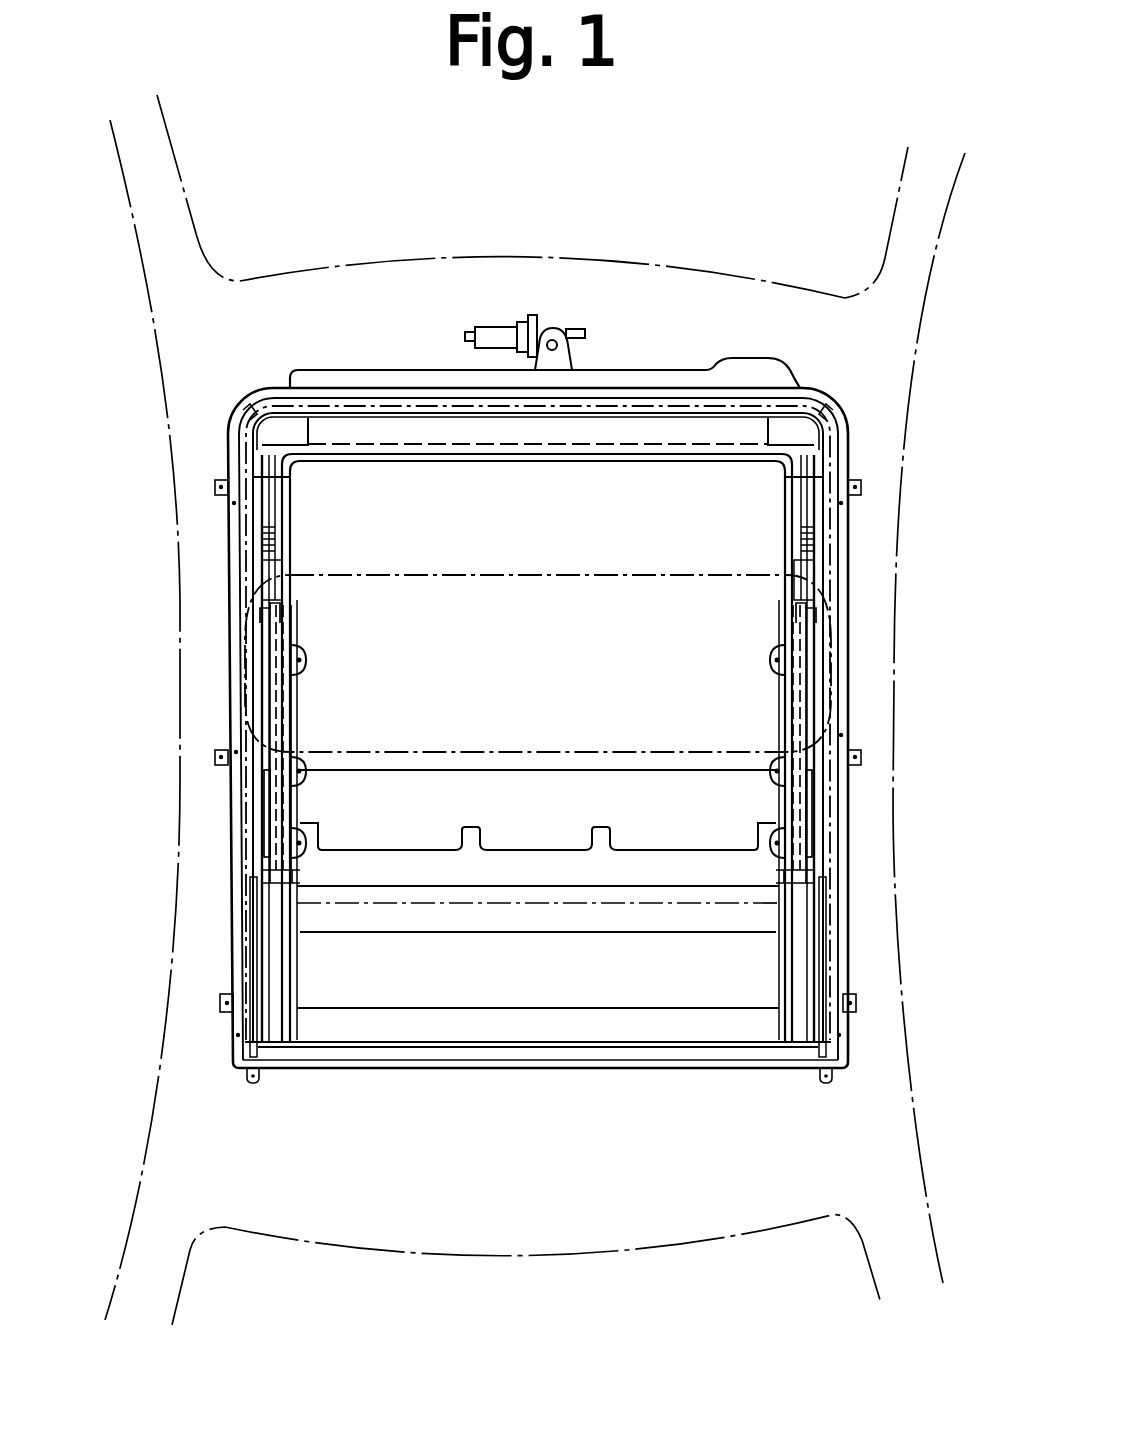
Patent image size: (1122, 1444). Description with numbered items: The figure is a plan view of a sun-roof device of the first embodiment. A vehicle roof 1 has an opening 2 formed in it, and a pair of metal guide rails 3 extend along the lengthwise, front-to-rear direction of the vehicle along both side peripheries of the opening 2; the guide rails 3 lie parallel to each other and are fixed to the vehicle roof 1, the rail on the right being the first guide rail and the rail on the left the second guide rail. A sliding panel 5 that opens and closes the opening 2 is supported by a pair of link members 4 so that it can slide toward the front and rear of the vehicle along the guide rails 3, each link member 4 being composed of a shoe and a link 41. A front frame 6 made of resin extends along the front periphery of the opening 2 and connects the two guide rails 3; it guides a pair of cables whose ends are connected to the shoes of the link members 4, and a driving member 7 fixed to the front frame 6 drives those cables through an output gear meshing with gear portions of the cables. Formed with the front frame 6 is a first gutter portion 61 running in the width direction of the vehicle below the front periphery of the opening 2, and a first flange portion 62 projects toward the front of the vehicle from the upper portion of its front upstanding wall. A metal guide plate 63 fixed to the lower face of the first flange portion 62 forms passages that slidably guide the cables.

The vehicle roof 1 is at (178, 645).
The opening 2 is at (374, 424).
The guide rails 3 is at (296, 523).
The link members 4 is at (300, 687).
The link 41 is at (289, 717).
The sliding panel 5 is at (509, 582).
The front frame 6 is at (226, 455).
The first gutter portion 61 is at (658, 408).
The first flange portion 62 is at (445, 378).
The guide plate 63 is at (623, 452).
The driving member 7 is at (518, 306).